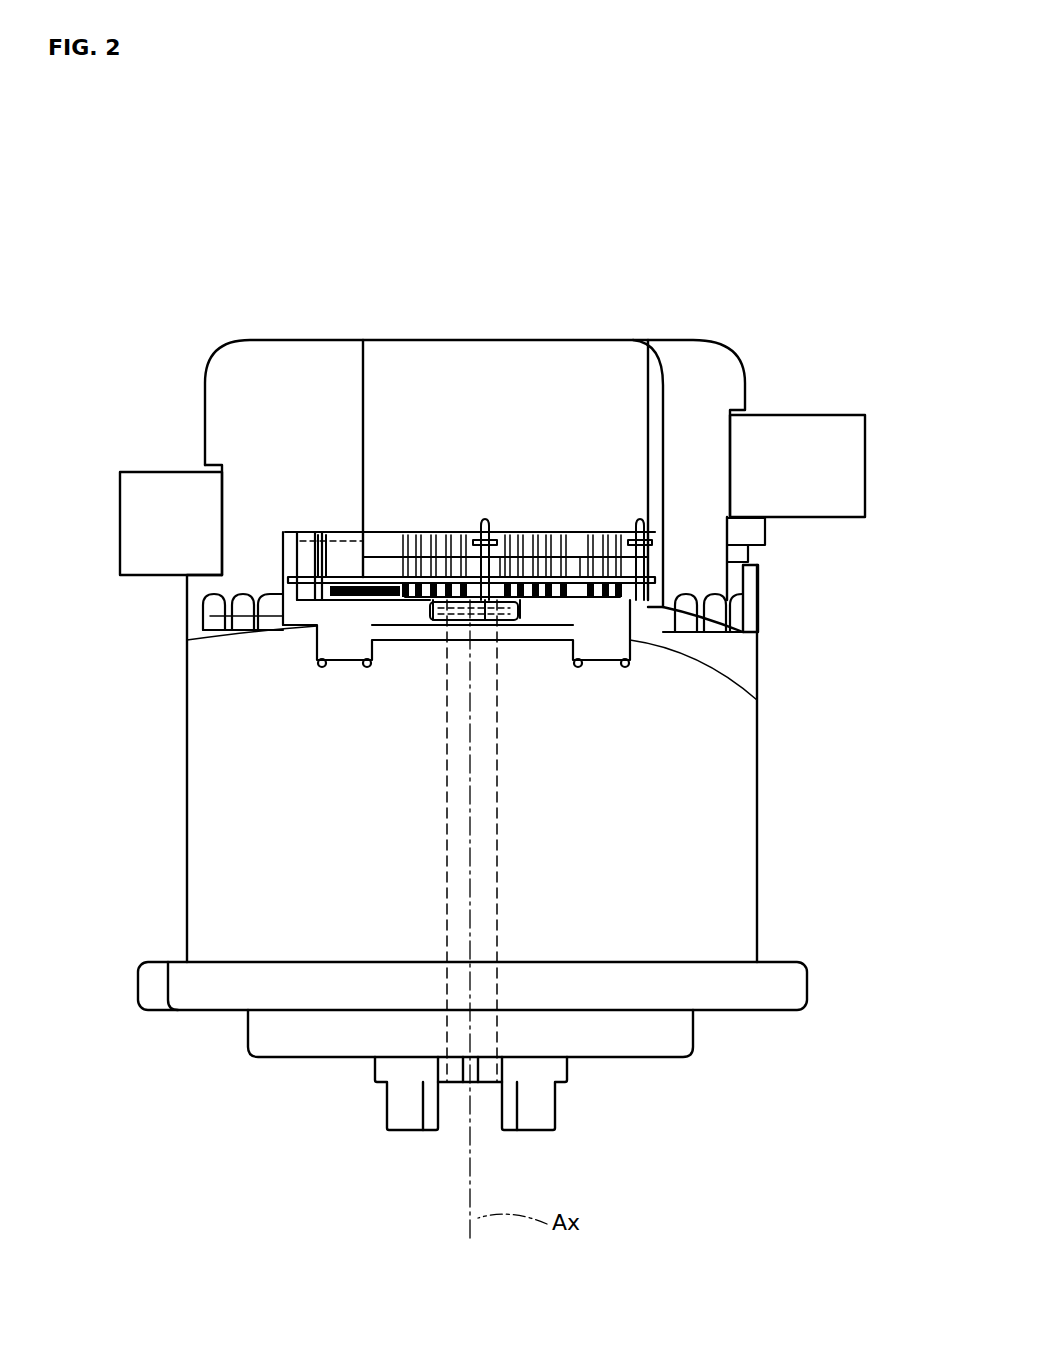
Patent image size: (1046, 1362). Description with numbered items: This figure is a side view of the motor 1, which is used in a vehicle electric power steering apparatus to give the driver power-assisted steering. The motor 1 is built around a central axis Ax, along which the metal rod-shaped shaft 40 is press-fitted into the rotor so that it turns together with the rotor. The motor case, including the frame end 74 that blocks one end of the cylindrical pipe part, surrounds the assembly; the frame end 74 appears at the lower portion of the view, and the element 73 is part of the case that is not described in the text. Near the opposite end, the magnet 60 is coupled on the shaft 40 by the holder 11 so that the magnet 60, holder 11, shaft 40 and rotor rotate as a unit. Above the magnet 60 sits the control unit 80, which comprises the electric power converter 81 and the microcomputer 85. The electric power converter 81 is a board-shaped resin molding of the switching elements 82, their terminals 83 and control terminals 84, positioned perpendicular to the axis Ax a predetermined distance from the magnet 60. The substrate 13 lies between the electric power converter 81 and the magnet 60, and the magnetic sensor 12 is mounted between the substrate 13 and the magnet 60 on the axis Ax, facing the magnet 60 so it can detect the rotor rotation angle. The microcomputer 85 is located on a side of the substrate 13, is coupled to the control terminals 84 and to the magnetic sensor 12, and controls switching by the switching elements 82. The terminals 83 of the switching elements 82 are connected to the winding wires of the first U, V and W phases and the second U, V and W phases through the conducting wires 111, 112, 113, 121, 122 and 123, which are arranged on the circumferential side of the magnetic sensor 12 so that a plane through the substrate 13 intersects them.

The motor 1 is at (198, 240).
The holder 11 is at (505, 622).
The magnetic sensor 12 is at (505, 575).
The substrate 13 is at (300, 598).
The shaft 40 is at (480, 866).
The magnet 60 is at (515, 615).
The connector housing 73 is at (745, 400).
The frame end 74 is at (272, 1060).
The control unit 80 is at (710, 590).
The electric power converter 81 is at (762, 552).
The switching element 82 is at (322, 535).
The terminal 83 is at (490, 600).
The control terminal 84 is at (565, 572).
The microcomputer 85 is at (372, 664).
The conducting wire 111 is at (317, 626).
The conducting wire 112 is at (297, 572).
The conducting wire 113 is at (535, 620).
The conducting wire 121 is at (655, 627).
The conducting wire 122 is at (657, 612).
The conducting wire 123 is at (440, 600).